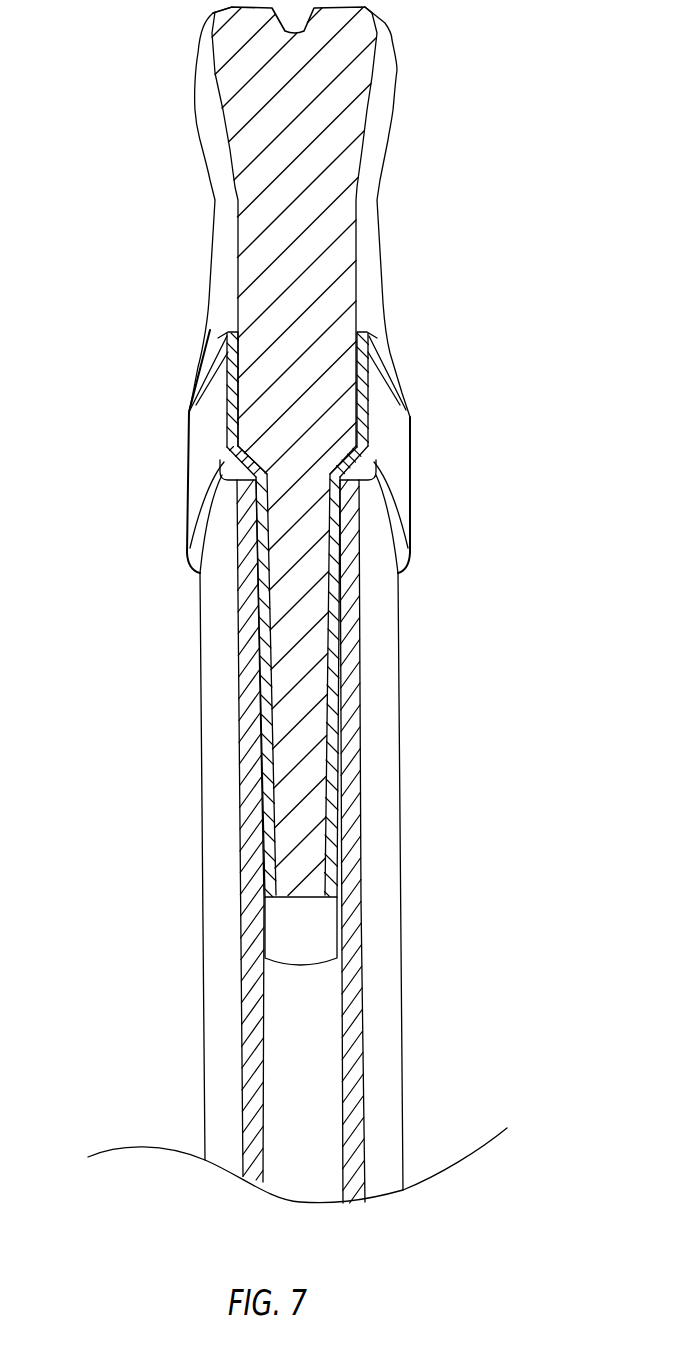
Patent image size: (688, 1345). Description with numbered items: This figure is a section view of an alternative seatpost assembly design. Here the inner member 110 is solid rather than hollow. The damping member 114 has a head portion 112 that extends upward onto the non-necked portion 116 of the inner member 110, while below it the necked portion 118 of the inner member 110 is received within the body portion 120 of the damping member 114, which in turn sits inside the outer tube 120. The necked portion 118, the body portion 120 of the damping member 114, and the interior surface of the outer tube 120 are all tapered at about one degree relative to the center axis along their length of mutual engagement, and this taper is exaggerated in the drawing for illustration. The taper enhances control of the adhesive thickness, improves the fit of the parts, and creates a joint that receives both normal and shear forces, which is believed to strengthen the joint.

The inner member 110 is at (342, 252).
The head portion 112 is at (402, 432).
The damping member 114 is at (193, 527).
The non-necked portion 116 is at (275, 400).
The necked portion 118 is at (307, 610).
The body portion 120 is at (333, 702).